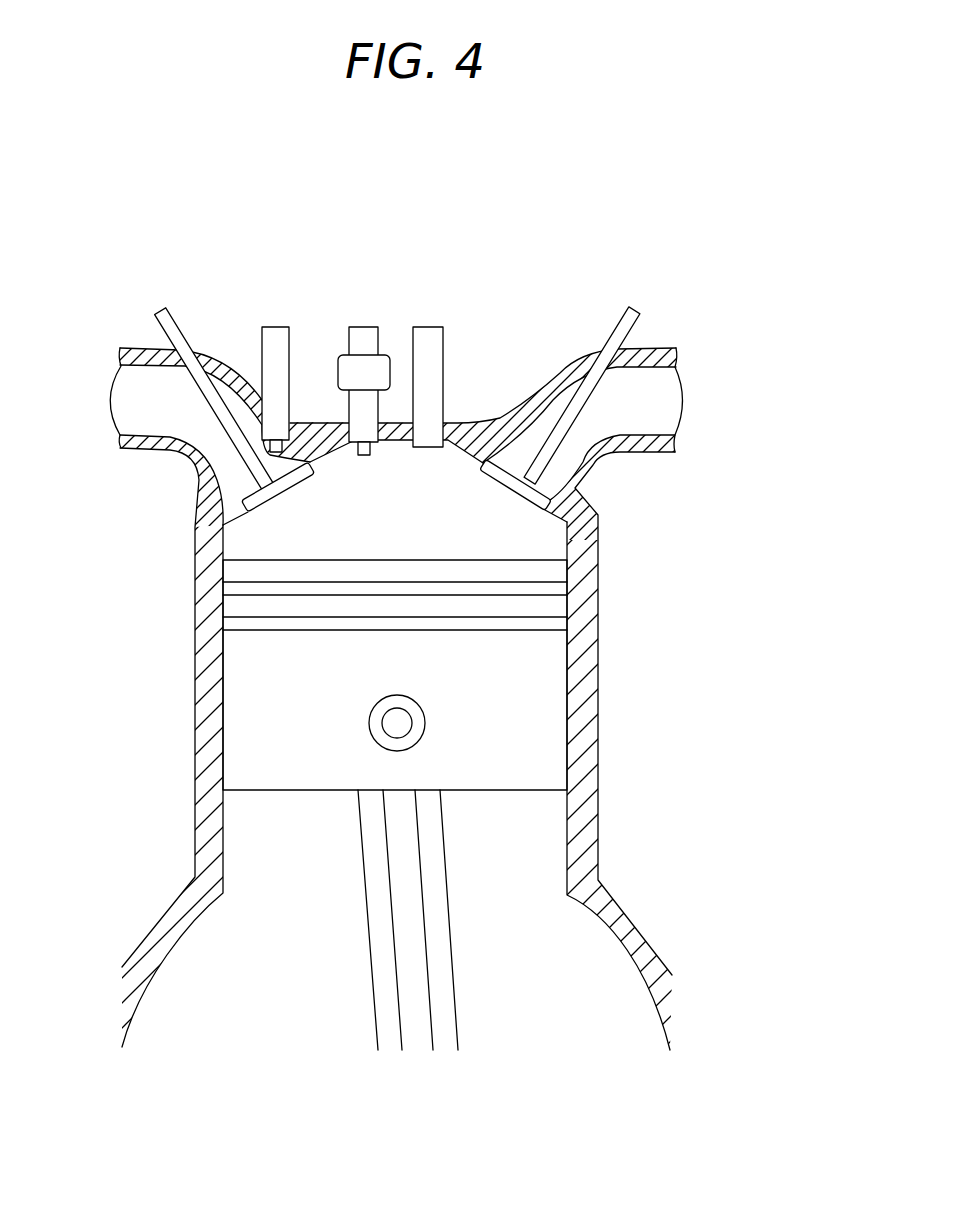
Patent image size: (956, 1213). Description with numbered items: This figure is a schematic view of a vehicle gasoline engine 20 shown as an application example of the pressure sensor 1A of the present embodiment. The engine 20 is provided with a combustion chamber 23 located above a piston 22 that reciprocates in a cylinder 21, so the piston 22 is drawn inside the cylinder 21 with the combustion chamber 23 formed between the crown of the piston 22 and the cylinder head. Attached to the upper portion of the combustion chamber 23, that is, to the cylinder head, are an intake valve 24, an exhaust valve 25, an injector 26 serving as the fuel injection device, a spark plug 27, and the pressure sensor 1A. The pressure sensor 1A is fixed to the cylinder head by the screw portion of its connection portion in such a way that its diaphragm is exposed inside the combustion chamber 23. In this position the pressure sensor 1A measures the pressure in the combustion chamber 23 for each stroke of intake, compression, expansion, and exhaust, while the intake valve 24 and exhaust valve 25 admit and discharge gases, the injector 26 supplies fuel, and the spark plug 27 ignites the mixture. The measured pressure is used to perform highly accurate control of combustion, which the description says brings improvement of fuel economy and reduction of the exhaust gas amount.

The vehicle gasoline engine 20 is at (438, 625).
The cylinder 21 is at (598, 672).
The piston 22 is at (243, 688).
The combustion chamber 23 is at (262, 537).
The intake valve 24 is at (182, 322).
The exhaust valve 25 is at (613, 327).
The injector 26 is at (276, 327).
The spark plug 27 is at (362, 327).
The pressure sensor 1A is at (428, 327).